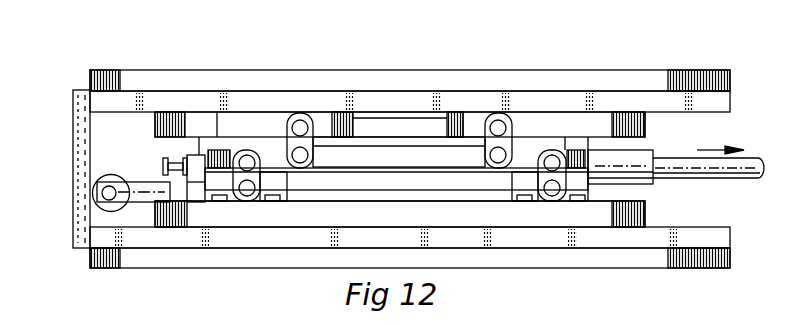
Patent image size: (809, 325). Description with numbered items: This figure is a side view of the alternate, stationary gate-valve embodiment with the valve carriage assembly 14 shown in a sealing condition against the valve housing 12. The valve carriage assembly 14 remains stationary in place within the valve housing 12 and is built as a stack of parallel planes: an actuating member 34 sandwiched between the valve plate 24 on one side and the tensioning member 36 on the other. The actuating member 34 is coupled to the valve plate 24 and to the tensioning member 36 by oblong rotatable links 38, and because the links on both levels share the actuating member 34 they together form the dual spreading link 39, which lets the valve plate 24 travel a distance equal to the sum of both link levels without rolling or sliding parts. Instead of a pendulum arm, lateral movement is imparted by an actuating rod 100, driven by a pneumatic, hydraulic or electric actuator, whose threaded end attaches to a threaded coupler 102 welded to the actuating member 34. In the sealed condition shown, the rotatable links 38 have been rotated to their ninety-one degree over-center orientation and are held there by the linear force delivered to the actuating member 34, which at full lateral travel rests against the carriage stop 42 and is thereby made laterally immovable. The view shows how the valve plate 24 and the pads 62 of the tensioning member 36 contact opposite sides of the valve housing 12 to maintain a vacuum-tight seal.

The valve housing 12 is at (643, 80).
The valve carriage assembly 14 is at (718, 133).
The valve plate 24 is at (637, 218).
The actuating member 34 is at (323, 160).
The tensioning member 36 is at (476, 125).
The rotatable links 38 is at (289, 142).
The dual spreading link 39 is at (553, 149).
The carriage stop 42 is at (199, 155).
The pads 62 is at (166, 114).
The actuating rod 100 is at (739, 170).
The threaded coupler 102 is at (650, 155).